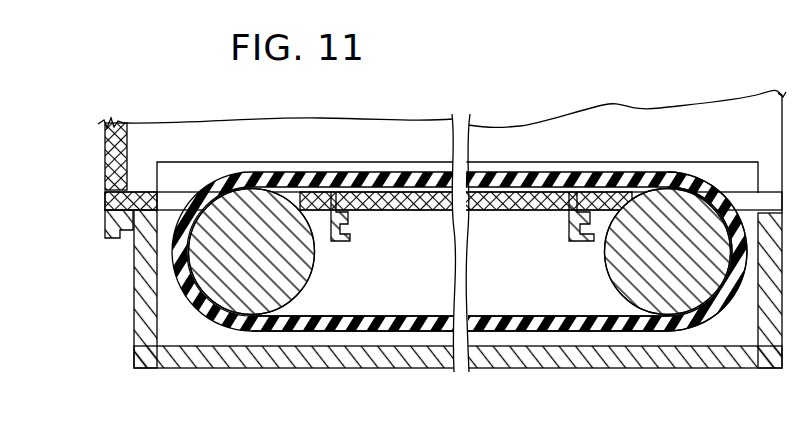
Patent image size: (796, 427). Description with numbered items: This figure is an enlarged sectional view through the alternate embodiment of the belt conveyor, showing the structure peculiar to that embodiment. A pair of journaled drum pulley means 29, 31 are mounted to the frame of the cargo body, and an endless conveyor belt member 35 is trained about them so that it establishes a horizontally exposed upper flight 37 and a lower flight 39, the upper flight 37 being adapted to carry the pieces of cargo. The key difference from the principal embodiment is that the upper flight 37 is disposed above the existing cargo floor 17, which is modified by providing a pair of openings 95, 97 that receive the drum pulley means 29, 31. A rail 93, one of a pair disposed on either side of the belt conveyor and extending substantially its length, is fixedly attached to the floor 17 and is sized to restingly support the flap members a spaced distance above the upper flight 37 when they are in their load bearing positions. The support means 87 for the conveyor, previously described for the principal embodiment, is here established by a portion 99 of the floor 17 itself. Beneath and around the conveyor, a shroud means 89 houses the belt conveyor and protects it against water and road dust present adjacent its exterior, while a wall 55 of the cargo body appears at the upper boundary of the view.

The cargo floor 17 is at (138, 188).
The drum pulley means 29 is at (297, 287).
The drum pulley means 31 is at (627, 270).
The endless conveyor belt member 35 is at (223, 318).
The upper flight 37 is at (517, 178).
The lower flight 39 is at (555, 323).
The wall 55 is at (406, 151).
The support means 87 is at (515, 228).
The shroud means 89 is at (335, 368).
The rail 93 is at (193, 177).
The opening 95 is at (162, 198).
The opening 97 is at (632, 180).
The portion of the floor 99 is at (407, 212).